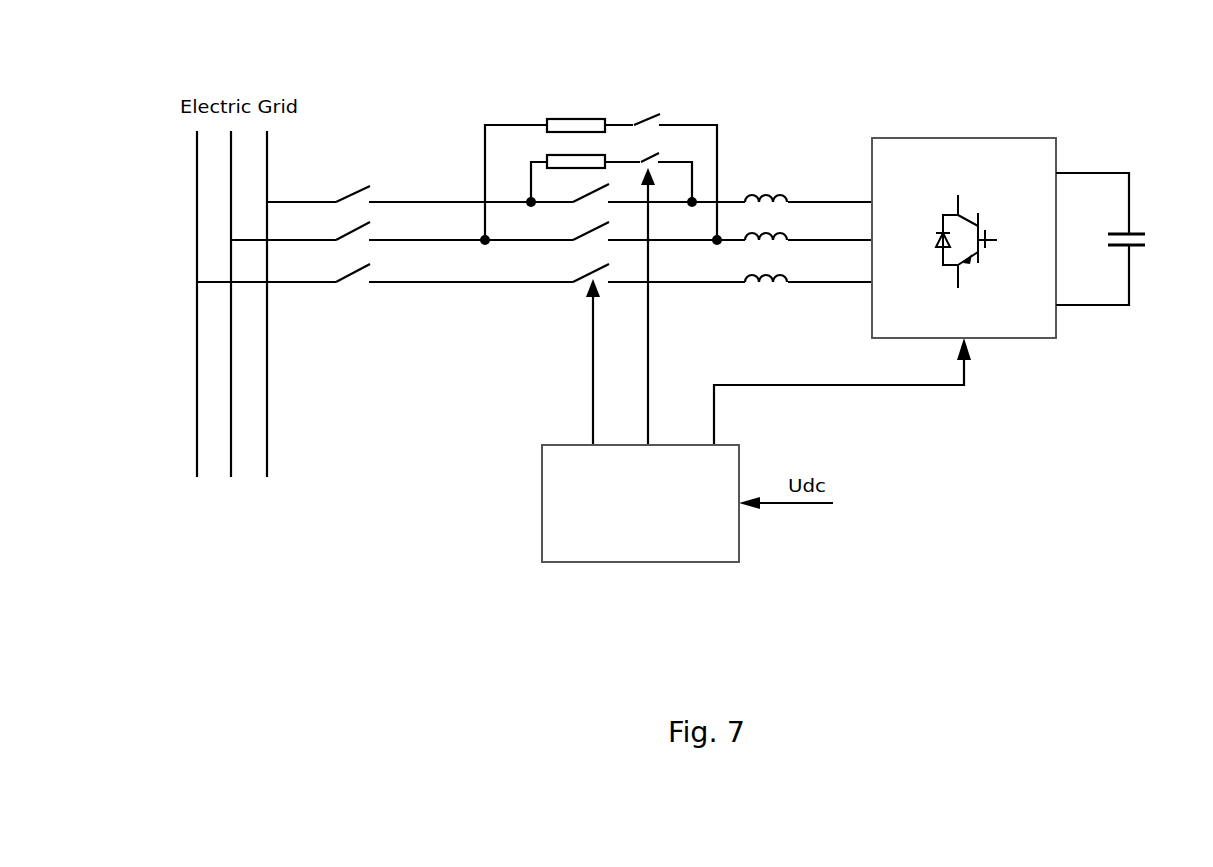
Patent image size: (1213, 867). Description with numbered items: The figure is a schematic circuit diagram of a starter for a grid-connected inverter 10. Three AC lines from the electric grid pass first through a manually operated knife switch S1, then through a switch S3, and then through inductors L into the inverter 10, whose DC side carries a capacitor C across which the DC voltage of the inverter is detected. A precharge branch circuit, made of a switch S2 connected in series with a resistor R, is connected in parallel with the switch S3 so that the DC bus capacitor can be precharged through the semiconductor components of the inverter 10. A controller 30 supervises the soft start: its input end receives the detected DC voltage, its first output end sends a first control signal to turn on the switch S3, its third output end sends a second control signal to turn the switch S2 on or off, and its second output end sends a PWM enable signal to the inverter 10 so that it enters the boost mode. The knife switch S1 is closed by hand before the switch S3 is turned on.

The grid-connected inverter 10 is at (966, 138).
The controller 30 is at (640, 563).
The knife switch S1 is at (353, 221).
The switch S2 is at (648, 268).
The switch S3 is at (582, 314).
The resistor R is at (576, 132).
The inductor L is at (766, 224).
The capacitor C is at (1121, 222).